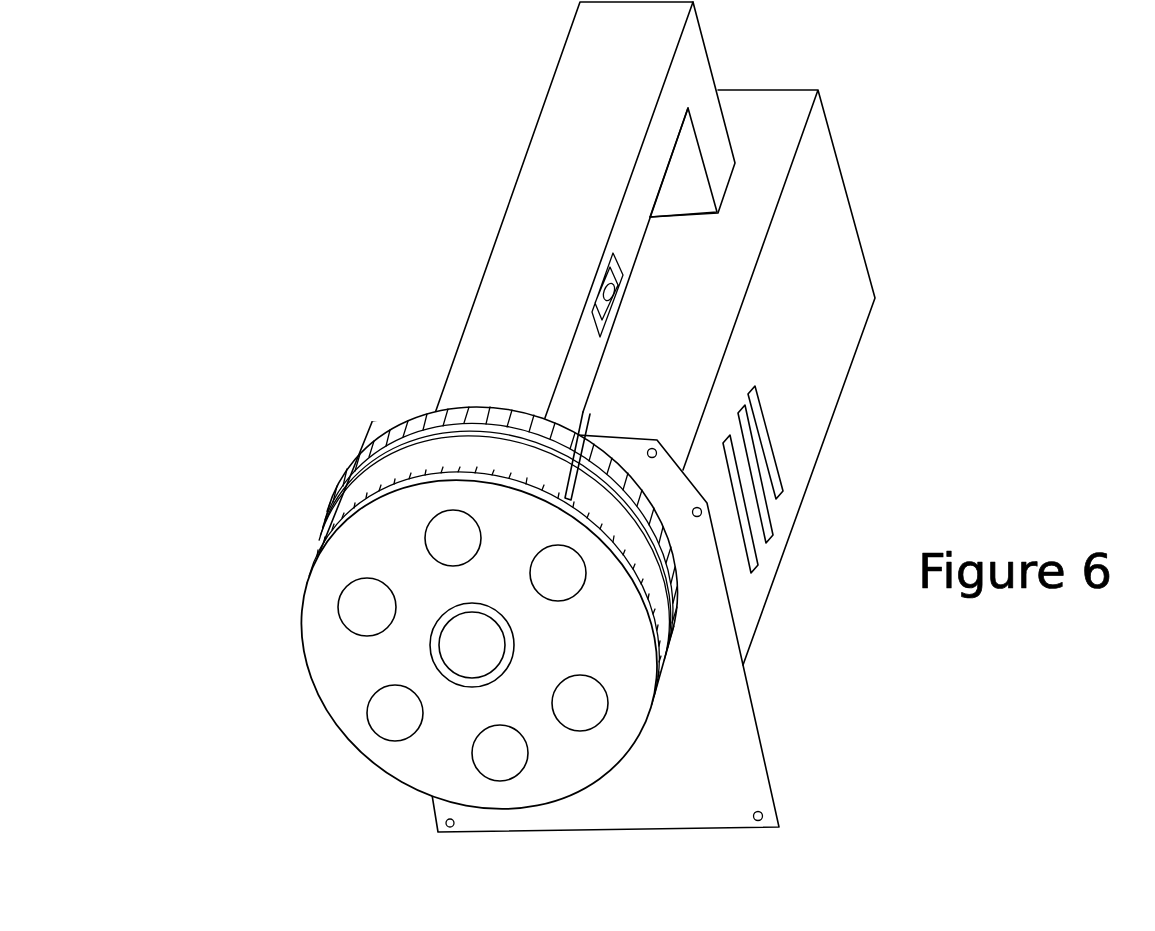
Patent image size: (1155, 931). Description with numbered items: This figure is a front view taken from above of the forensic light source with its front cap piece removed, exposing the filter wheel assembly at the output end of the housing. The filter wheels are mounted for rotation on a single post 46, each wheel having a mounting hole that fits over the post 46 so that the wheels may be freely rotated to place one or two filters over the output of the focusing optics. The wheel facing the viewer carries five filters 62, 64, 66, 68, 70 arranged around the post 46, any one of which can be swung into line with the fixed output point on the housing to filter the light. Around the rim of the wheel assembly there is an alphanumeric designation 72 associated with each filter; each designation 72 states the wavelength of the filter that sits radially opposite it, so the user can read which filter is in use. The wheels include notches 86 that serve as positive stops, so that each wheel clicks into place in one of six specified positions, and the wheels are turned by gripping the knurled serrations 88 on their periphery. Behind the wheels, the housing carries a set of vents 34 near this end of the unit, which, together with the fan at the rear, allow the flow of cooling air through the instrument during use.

The vents 34 is at (768, 418).
The post 46 is at (457, 648).
The filter 62 is at (470, 511).
The filter 64 is at (534, 600).
The filter 66 is at (606, 712).
The filter 68 is at (490, 724).
The filter 70 is at (422, 698).
The alphanumeric designation 72 is at (495, 433).
The notches 86 is at (583, 433).
The knurled serrations 88 is at (441, 410).